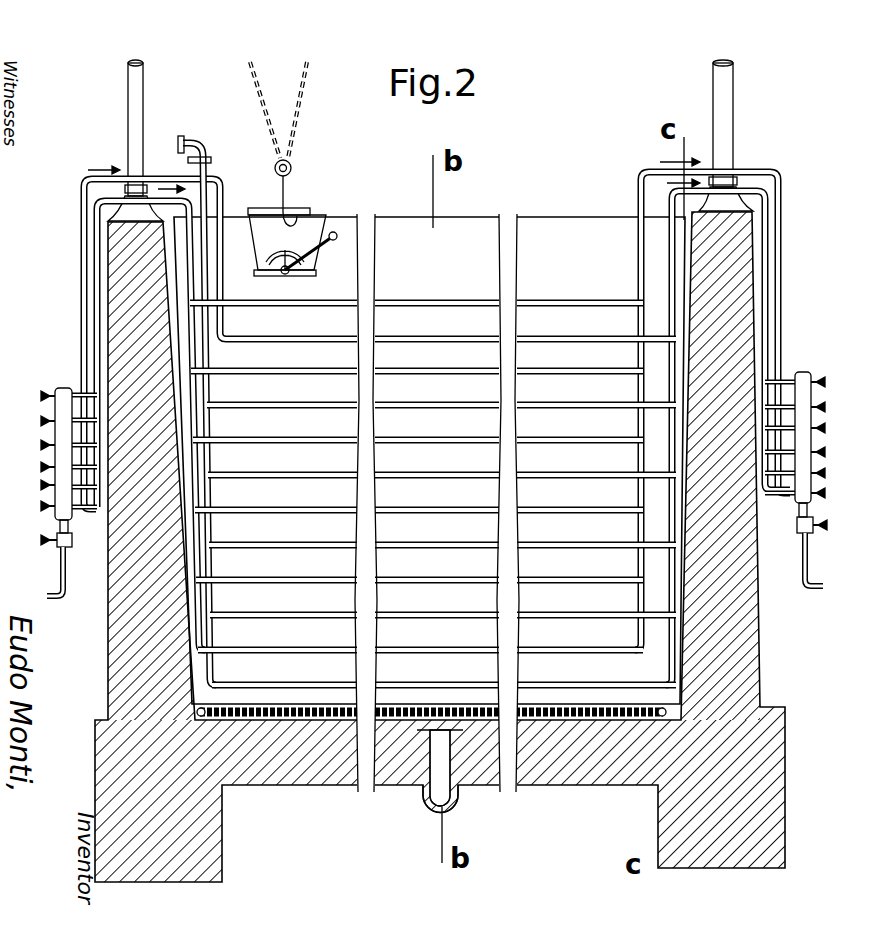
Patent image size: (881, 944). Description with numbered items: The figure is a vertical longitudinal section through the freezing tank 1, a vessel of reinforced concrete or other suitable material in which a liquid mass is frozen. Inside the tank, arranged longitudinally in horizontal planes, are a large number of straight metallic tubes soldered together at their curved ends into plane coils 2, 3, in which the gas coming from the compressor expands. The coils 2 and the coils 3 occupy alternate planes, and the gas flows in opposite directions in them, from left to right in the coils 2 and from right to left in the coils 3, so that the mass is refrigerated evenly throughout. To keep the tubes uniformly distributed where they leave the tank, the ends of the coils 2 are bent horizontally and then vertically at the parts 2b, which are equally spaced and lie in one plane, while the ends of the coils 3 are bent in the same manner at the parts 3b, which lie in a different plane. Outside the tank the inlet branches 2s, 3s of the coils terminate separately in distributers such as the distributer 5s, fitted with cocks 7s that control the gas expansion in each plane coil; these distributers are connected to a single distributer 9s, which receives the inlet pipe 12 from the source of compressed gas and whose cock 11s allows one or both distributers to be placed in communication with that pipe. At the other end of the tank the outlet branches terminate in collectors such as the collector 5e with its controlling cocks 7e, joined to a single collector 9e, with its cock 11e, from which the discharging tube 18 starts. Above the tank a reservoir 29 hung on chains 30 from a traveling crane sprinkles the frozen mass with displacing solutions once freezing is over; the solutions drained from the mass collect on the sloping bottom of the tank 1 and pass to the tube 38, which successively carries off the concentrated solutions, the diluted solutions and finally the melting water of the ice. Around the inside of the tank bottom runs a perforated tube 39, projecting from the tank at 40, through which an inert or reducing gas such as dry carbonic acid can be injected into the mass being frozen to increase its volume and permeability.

The freezing tank 1 is at (520, 222).
The plane coils 2 is at (348, 303).
The plane coils 3 is at (355, 342).
The vertically bent end parts of coils 2 2b is at (642, 242).
The vertically bent end parts of coils 3 3b is at (672, 262).
The inlet branches of coils 2 2s is at (780, 235).
The inlet branches of coils 3 3s is at (768, 280).
The collector 5e is at (65, 388).
The controlling cocks 7e is at (47, 507).
The single collector 9e is at (71, 546).
The cock 11e is at (46, 543).
The inlet pipe 12 is at (62, 592).
The distributer 5s is at (803, 372).
The controlling cocks 7s is at (823, 493).
The single distributer 9s is at (797, 527).
The cock 11s is at (828, 525).
The discharging tube 18 is at (814, 586).
The reservoir 29 is at (303, 235).
The chains 30 is at (300, 135).
The tube 38 is at (428, 790).
The perforated tube 39 is at (325, 722).
The projecting part of tube 39 40 is at (200, 149).